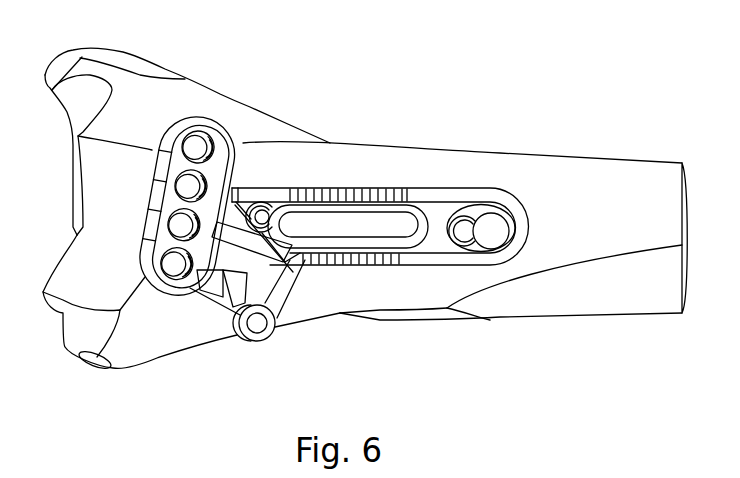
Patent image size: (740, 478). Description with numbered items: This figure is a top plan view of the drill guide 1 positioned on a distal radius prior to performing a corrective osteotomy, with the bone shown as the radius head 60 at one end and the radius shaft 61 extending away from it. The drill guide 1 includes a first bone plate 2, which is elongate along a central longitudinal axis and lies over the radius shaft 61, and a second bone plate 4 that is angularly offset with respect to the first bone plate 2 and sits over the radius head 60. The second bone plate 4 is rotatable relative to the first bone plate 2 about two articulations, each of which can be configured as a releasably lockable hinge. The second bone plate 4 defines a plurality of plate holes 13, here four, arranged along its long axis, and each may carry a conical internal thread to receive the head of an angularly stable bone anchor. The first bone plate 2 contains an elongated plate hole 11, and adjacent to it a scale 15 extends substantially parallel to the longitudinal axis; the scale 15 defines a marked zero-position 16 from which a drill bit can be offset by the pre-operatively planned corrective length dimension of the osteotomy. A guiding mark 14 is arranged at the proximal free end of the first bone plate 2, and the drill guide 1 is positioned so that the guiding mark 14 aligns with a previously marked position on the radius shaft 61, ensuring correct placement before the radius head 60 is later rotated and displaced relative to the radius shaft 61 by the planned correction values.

The drill guide 1 is at (263, 183).
The first bone plate 2 is at (401, 222).
The second bone plate 4 is at (177, 170).
The elongated plate hole 11 is at (357, 230).
The plate holes 13 is at (192, 140).
The guiding mark 14 is at (527, 226).
The scale 15 is at (360, 183).
The zero-position 16 is at (408, 190).
The radius head 60 is at (130, 343).
The radius shaft 61 is at (497, 305).